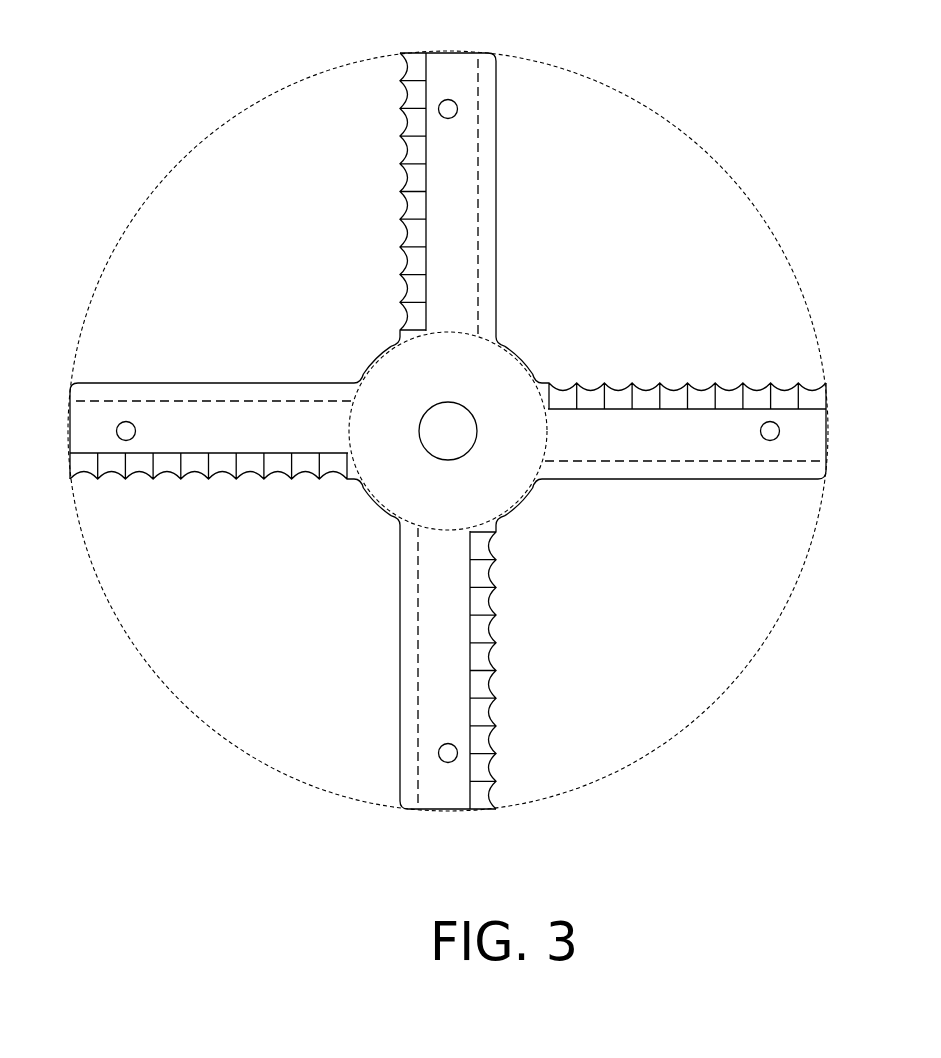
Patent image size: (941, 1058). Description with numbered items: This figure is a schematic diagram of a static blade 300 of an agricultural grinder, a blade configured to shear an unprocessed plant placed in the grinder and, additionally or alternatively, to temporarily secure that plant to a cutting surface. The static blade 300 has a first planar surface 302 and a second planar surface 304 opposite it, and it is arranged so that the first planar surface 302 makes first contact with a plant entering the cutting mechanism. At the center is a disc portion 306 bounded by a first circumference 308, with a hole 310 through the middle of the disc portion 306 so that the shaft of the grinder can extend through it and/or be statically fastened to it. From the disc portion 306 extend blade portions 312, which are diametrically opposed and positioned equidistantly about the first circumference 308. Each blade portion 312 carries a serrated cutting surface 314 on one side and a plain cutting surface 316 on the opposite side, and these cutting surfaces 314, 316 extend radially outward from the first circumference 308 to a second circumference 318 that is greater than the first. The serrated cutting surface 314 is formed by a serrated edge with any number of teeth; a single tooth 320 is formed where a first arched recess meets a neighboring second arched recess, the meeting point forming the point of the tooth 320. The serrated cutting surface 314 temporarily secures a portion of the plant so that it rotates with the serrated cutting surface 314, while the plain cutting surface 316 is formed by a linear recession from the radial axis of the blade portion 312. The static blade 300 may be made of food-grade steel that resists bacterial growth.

The static blade 300 is at (489, 427).
The first planar surface 302 is at (500, 365).
The second planar surface 304 is at (511, 510).
The disc portion 306 is at (378, 433).
The first circumference 308 is at (379, 352).
The hole 310 is at (434, 421).
The blade portions 312 is at (829, 424).
The serrated cutting surface 314 is at (699, 392).
The plain cutting surface 316 is at (699, 480).
The second circumference 318 is at (181, 703).
The tooth 320 is at (208, 484).